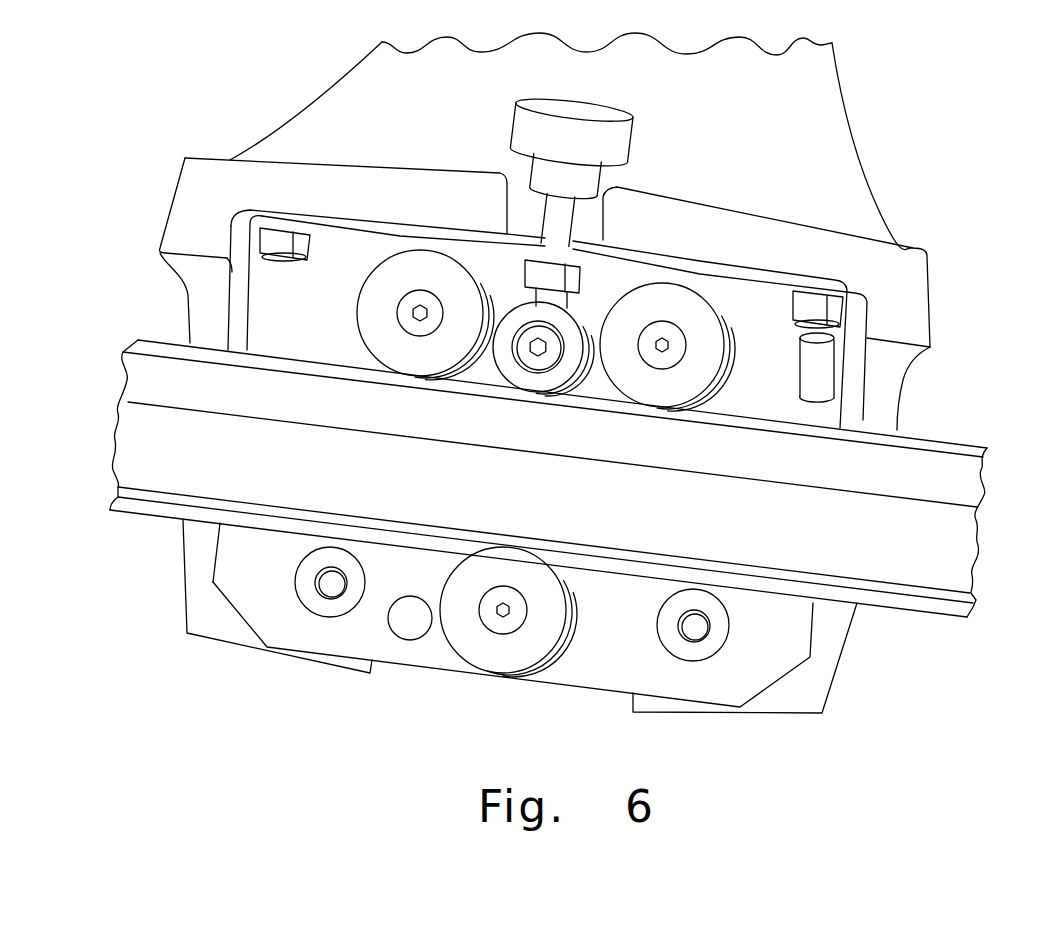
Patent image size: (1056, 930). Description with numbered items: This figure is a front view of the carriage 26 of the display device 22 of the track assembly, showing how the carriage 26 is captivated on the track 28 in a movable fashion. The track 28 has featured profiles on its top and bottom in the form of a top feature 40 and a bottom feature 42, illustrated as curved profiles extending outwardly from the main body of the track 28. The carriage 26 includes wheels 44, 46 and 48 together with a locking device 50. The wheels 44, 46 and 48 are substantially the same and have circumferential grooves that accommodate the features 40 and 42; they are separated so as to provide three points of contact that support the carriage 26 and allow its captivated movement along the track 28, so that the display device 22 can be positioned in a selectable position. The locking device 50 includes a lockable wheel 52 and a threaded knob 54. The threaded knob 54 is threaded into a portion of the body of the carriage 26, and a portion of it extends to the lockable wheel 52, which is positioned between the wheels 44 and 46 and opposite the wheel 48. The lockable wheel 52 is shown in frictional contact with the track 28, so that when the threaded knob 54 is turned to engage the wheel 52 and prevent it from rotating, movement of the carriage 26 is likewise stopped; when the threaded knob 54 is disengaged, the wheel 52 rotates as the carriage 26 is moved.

The display device 22 is at (908, 142).
The carriage 26 is at (879, 272).
The track 28 is at (564, 503).
The top feature 40 is at (936, 442).
The bottom feature 42 is at (910, 616).
The wheel 44 is at (362, 306).
The wheel 46 is at (722, 320).
The wheel 48 is at (578, 604).
The locking device 50 is at (590, 159).
The lockable wheel 52 is at (570, 323).
The threaded knob 54 is at (617, 136).